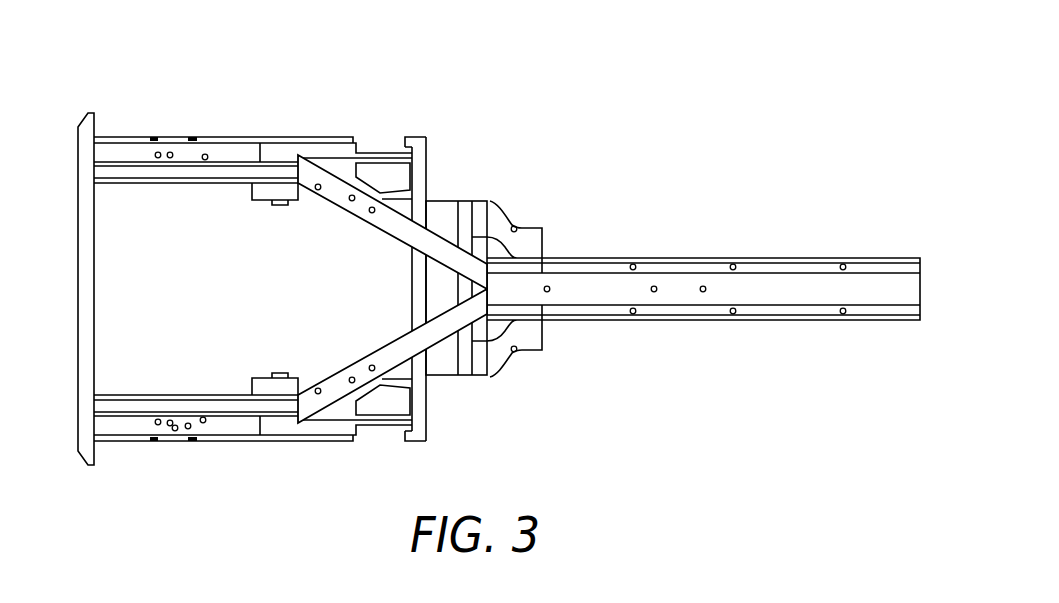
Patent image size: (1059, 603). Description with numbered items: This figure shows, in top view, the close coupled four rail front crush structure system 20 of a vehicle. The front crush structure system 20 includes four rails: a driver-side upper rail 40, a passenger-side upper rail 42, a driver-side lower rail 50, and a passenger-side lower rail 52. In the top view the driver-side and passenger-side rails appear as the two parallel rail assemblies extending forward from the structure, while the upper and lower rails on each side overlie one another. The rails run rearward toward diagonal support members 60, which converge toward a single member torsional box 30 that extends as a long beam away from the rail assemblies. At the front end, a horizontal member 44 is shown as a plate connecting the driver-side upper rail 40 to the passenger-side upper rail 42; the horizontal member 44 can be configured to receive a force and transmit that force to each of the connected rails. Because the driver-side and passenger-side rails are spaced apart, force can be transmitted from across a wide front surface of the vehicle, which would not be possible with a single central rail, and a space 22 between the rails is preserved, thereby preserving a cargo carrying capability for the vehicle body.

The front crush structure system 20 is at (388, 220).
The space 22 is at (207, 262).
The single member torsional box 30 is at (668, 270).
The driver-side upper rail 40 is at (147, 417).
The passenger-side upper rail 42 is at (182, 150).
The horizontal member 44 is at (78, 398).
The driver-side lower rail 50 is at (133, 422).
The passenger-side lower rail 52 is at (133, 155).
The diagonal support members 60 is at (338, 192).